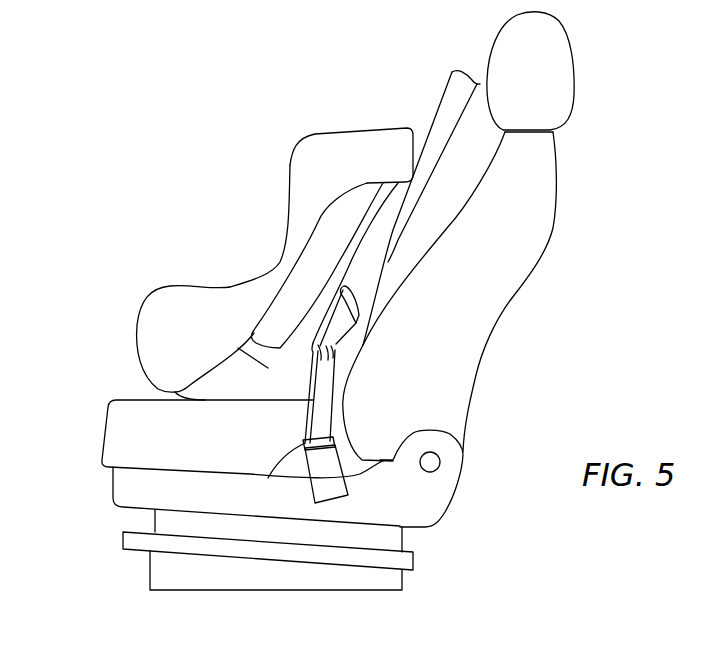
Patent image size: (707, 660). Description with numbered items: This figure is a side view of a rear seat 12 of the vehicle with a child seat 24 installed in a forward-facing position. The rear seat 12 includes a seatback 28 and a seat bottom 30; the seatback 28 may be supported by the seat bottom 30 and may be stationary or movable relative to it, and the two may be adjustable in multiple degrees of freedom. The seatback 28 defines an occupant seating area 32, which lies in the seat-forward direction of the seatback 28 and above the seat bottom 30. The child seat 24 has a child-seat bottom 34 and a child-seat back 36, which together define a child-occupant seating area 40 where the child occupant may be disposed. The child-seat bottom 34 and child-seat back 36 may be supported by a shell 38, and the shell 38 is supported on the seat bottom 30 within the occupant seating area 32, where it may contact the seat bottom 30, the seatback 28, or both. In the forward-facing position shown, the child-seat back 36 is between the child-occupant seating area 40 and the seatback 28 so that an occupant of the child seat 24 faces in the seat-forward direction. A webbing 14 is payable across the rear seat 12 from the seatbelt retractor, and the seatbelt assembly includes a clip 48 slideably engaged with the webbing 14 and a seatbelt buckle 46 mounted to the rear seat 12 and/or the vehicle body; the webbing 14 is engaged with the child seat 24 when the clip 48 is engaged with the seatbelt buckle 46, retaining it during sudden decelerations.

The rear seat 12 is at (608, 46).
The webbing 14 is at (312, 417).
The child seat 24 is at (170, 272).
The seatback 28 is at (534, 270).
The seat bottom 30 is at (118, 438).
The occupant seating area 32 is at (378, 100).
The child-seat bottom 34 is at (318, 163).
The child-seat back 36 is at (217, 324).
The shell 38 is at (343, 358).
The child-occupant seating area 40 is at (234, 212).
The seatbelt buckle 46 is at (337, 320).
The clip 48 is at (268, 478).